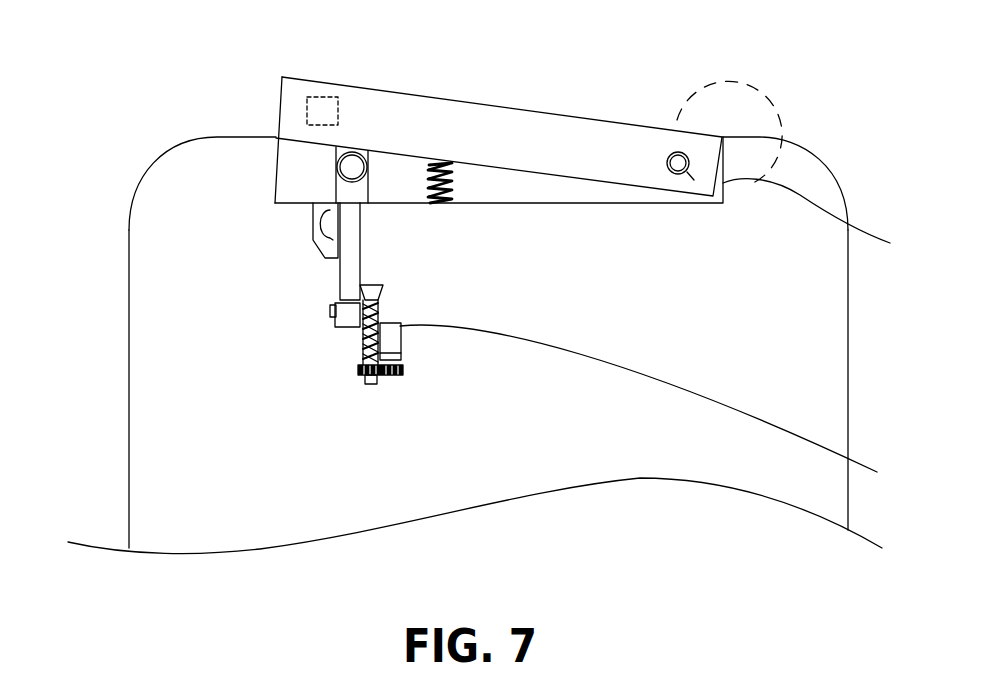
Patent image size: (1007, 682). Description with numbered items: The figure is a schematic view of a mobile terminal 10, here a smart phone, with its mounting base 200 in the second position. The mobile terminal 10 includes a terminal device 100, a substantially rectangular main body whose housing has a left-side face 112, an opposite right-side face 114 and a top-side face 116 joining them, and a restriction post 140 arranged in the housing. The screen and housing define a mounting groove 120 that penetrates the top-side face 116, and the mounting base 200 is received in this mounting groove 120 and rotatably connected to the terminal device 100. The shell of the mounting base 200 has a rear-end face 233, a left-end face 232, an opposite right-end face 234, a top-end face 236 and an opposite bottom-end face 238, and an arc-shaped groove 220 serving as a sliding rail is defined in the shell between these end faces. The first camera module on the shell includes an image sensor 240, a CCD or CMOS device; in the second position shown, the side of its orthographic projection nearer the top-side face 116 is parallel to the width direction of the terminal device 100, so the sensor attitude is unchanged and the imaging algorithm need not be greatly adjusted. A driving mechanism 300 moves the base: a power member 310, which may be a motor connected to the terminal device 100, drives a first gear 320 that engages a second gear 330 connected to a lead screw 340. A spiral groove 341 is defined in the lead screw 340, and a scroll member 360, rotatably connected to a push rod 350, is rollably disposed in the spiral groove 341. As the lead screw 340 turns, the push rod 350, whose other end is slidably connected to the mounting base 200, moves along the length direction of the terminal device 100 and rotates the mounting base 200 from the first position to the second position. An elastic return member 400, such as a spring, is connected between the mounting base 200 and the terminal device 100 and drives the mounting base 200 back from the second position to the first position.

The mobile terminal 10 is at (130, 155).
The terminal device 100 is at (130, 445).
The left-side face 112 is at (130, 512).
The right-side face 114 is at (848, 378).
The top-side face 116 is at (237, 137).
The mounting groove 120 is at (508, 190).
The restriction post 140 is at (670, 157).
The mounting base 200 is at (414, 96).
The arc-shaped groove 220 is at (673, 148).
The left-end face 232 is at (280, 103).
The rear-end face 233 is at (575, 157).
The right-end face 234 is at (829, 221).
The top-end face 236 is at (360, 86).
The bottom-end face 238 is at (307, 143).
The image sensor 240 is at (320, 102).
The driving mechanism 300 is at (398, 354).
The power member 310 is at (660, 407).
The first gear 320 is at (407, 372).
The second gear 330 is at (377, 376).
The lead screw 340 is at (365, 368).
The spiral groove 341 is at (372, 355).
The push rod 350 is at (350, 253).
The scroll member 360 is at (360, 315).
The elastic return member 400 is at (432, 170).